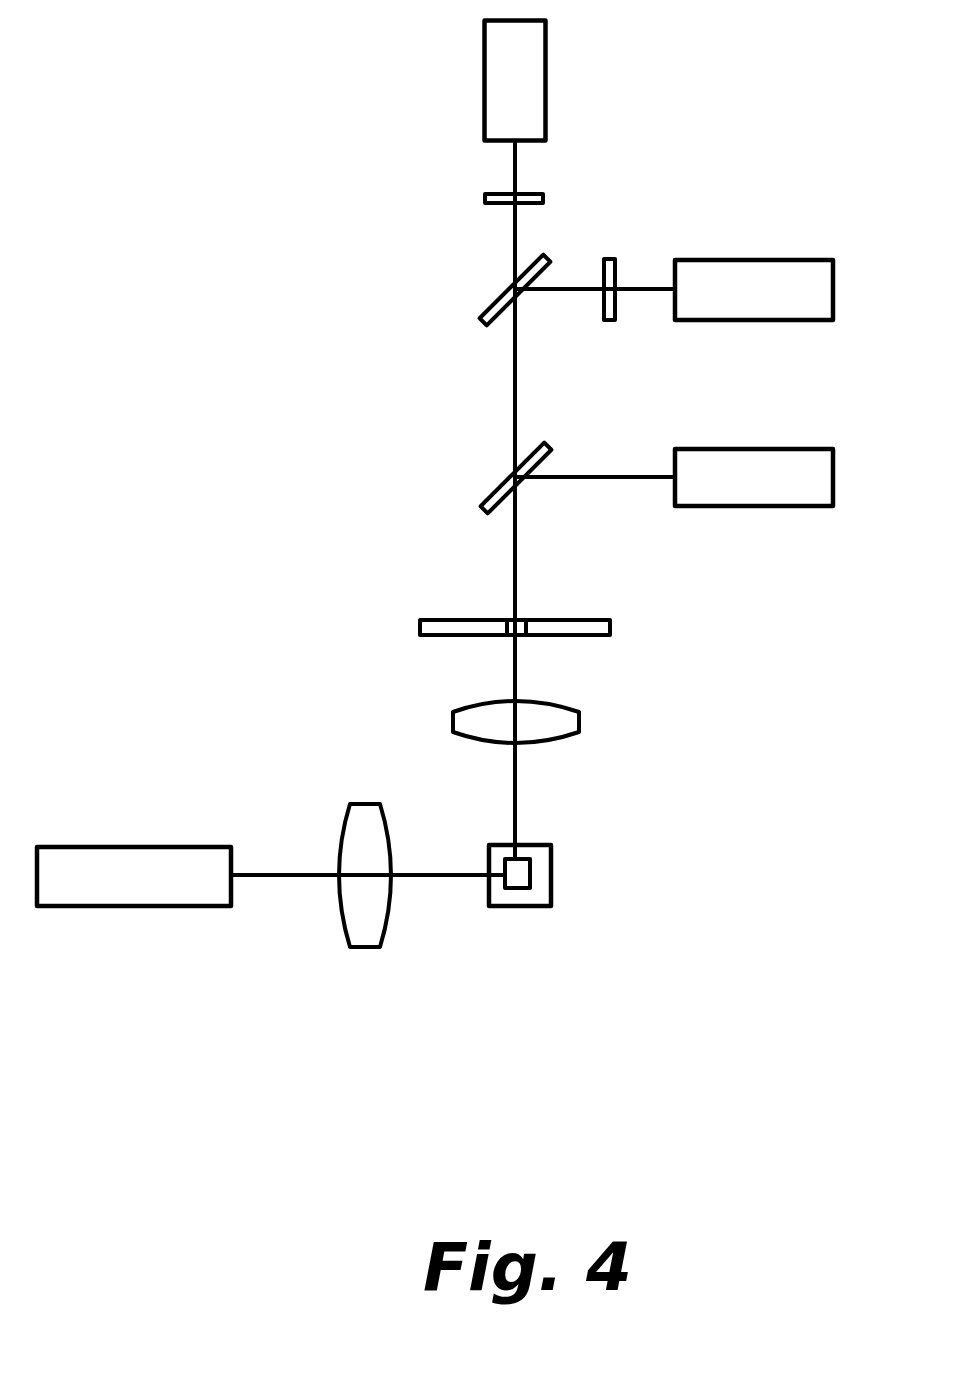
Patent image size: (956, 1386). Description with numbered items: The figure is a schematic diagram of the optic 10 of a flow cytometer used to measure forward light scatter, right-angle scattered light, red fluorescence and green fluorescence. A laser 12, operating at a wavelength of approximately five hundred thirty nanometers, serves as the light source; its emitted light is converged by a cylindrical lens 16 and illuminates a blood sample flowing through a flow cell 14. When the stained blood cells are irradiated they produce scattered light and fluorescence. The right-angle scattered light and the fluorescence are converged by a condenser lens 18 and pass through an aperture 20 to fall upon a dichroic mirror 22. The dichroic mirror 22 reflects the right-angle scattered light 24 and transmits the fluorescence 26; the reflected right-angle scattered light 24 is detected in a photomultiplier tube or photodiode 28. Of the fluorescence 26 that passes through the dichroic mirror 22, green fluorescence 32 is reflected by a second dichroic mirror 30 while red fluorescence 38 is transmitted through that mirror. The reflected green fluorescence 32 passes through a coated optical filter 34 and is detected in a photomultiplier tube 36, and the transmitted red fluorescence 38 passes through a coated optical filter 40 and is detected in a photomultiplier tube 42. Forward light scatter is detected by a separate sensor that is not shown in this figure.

The optic 10 is at (858, 780).
The laser 12 is at (85, 910).
The flow cell 14 is at (517, 910).
The cylindrical lens 16 is at (360, 948).
The condenser lens 18 is at (453, 720).
The aperture 20 is at (418, 627).
The dichroic mirror 22 is at (490, 490).
The right-angle scattered light 24 is at (588, 473).
The fluorescence 26 is at (513, 402).
The photomultiplier tube or photodiode 28 is at (800, 447).
The dichroic mirror 30 is at (500, 293).
The green fluorescence 32 is at (587, 287).
The coated optical filter 34 is at (618, 272).
The photomultiplier tube 36 is at (787, 258).
The red fluorescence 38 is at (517, 246).
The coated optical filter 40 is at (483, 200).
The photomultiplier tube 42 is at (482, 58).